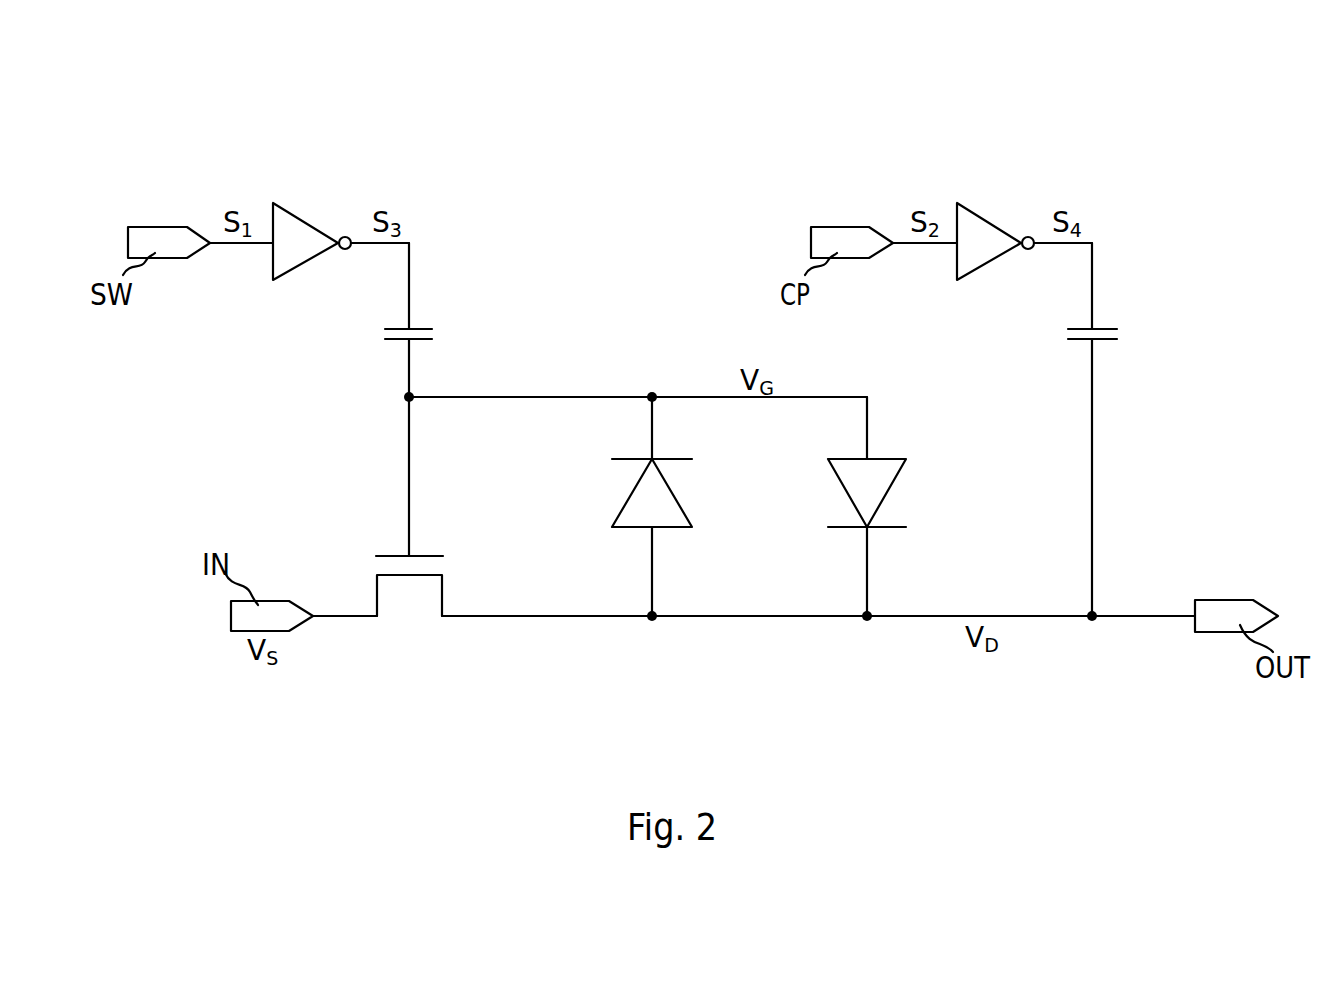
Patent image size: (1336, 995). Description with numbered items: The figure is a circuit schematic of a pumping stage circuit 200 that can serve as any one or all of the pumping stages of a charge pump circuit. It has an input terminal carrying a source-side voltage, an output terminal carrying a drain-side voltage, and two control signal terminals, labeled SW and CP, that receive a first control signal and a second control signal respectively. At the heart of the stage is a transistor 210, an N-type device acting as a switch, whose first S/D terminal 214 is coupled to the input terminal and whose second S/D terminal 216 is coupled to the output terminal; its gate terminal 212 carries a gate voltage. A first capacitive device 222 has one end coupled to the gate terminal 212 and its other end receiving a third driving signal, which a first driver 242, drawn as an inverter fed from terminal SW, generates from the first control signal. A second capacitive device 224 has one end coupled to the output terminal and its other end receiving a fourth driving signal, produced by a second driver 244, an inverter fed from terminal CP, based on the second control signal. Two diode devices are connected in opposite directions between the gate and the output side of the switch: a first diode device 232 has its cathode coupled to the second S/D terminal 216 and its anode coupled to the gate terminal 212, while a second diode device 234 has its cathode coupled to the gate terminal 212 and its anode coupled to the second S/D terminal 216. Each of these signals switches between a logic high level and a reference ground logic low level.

The pumping stage circuit 200 is at (1122, 107).
The transistor 210 is at (409, 618).
The gate terminal 212 is at (408, 514).
The first S/D terminal 214 is at (342, 617).
The second S/D terminal 216 is at (557, 617).
The first capacitive device 222 is at (370, 332).
The second capacitive device 224 is at (1138, 331).
The first diode device 232 is at (884, 487).
The second diode device 234 is at (628, 495).
The first driver 242 is at (296, 225).
The second driver 244 is at (977, 235).